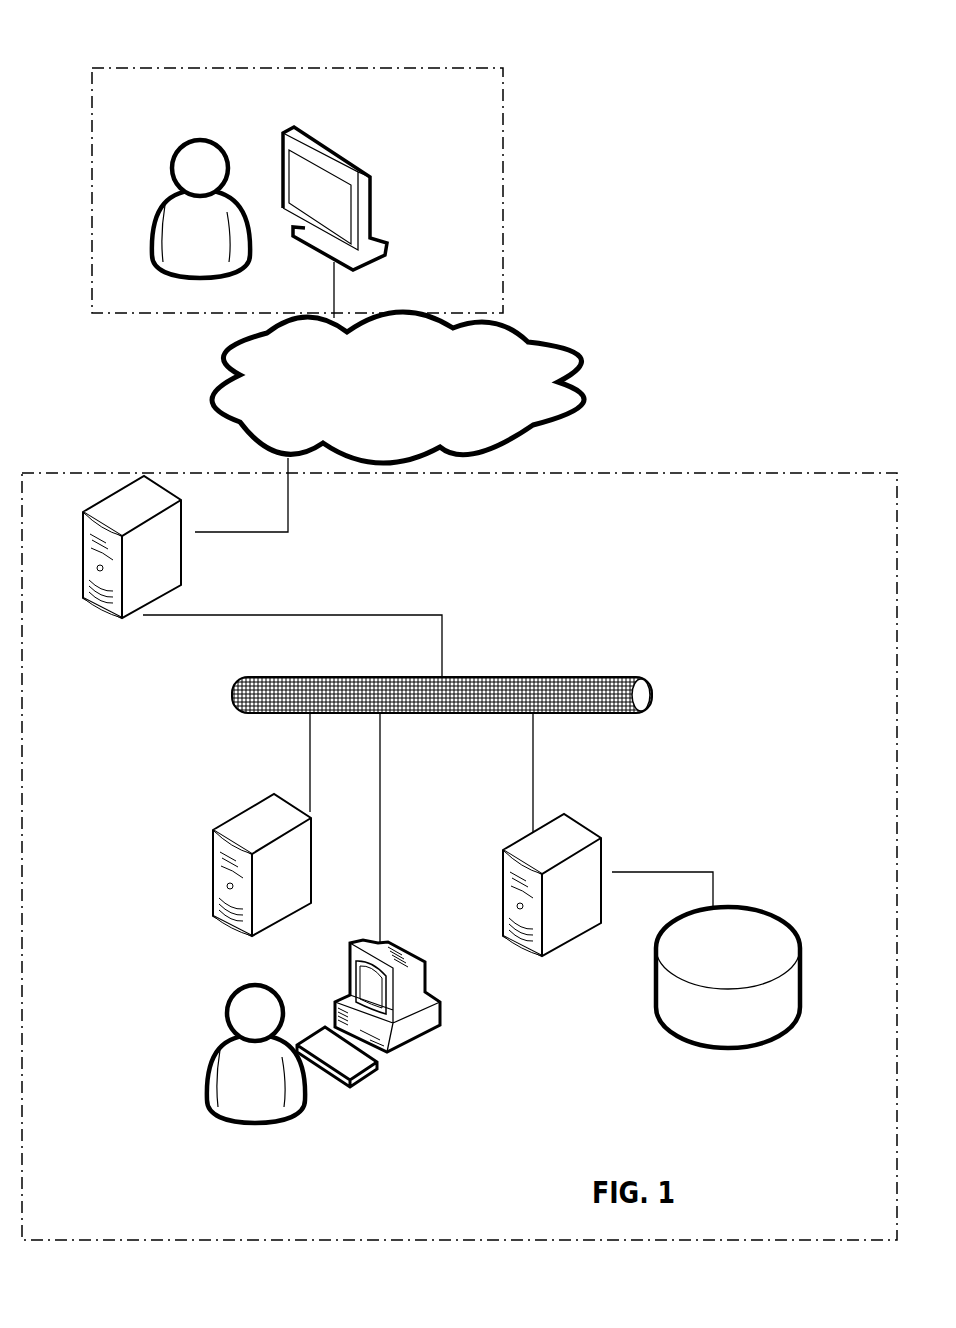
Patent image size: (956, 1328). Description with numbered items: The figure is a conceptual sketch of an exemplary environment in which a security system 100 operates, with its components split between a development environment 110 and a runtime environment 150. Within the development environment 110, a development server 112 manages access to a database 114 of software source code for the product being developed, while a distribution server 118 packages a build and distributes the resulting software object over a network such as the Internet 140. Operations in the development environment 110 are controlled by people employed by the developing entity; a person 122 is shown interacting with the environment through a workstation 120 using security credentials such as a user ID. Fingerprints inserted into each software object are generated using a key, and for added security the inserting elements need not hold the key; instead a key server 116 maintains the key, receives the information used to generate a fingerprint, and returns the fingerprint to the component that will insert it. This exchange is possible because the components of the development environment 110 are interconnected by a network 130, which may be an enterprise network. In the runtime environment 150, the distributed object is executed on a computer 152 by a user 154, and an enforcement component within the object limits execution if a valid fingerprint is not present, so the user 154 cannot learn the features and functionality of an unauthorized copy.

The security system 100 is at (589, 91).
The development environment 110 is at (688, 454).
The development server 112 is at (552, 902).
The database 114 is at (713, 1048).
The key server 116 is at (262, 882).
The distribution server 118 is at (132, 571).
The workstation 120 is at (352, 1078).
The person 122 is at (247, 1122).
The network 130 is at (667, 680).
The Internet 140 is at (423, 398).
The runtime environment 150 is at (267, 57).
The computer 152 is at (353, 158).
The user 154 is at (198, 137).